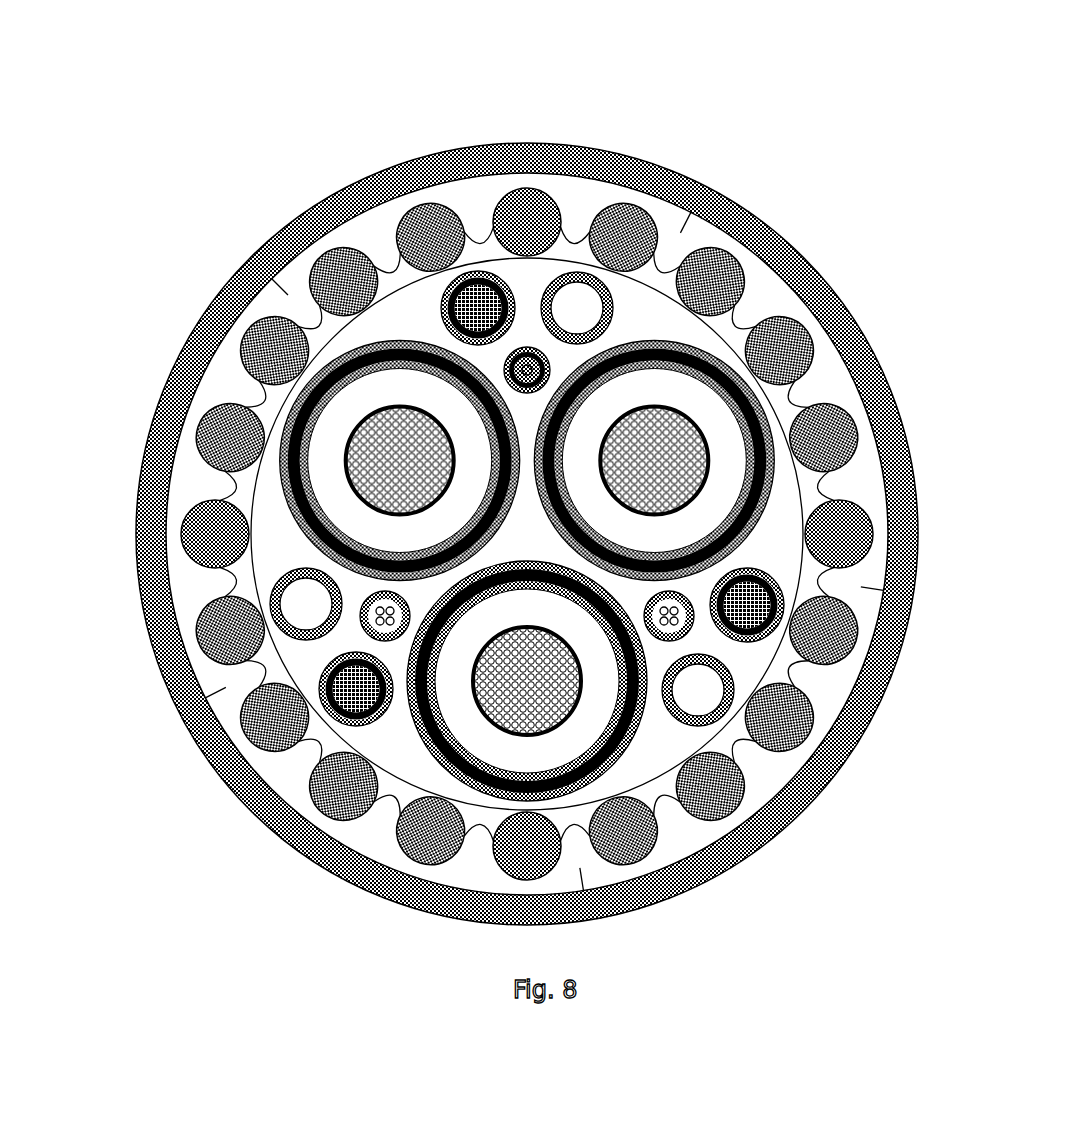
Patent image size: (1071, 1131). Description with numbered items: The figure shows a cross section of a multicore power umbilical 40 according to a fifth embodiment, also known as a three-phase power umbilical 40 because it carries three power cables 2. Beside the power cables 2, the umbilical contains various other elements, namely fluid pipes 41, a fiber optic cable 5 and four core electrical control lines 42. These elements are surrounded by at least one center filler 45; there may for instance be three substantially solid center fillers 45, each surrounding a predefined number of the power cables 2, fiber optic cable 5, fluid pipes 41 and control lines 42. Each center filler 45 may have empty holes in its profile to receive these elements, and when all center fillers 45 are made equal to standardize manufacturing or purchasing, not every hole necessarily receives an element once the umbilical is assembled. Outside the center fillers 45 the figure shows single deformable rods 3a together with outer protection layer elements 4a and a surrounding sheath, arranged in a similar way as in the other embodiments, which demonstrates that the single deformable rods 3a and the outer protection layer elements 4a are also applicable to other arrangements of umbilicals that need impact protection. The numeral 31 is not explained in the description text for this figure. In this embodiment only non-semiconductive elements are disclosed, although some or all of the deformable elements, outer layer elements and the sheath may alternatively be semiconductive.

The power umbilical 40 is at (170, 136).
The single deformable rod 3a is at (340, 285).
The four core electrical control line 42 is at (483, 277).
The fiber optic cable 5 is at (530, 350).
The fluid pipe 41 is at (568, 307).
The center filler 45 is at (648, 305).
The power cable 2 is at (708, 422).
The outer protection layer element 4a is at (835, 370).
The armour bedding layer 31 is at (662, 802).